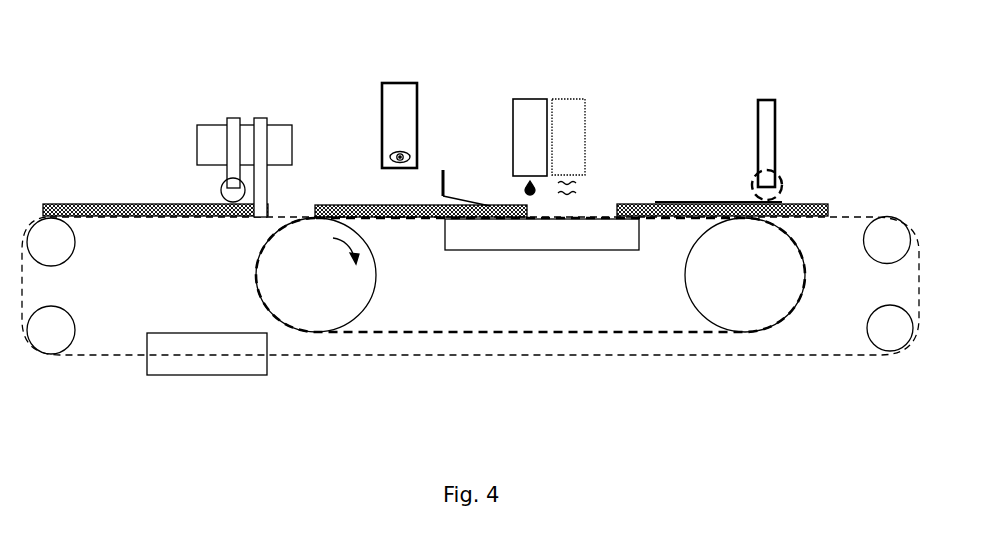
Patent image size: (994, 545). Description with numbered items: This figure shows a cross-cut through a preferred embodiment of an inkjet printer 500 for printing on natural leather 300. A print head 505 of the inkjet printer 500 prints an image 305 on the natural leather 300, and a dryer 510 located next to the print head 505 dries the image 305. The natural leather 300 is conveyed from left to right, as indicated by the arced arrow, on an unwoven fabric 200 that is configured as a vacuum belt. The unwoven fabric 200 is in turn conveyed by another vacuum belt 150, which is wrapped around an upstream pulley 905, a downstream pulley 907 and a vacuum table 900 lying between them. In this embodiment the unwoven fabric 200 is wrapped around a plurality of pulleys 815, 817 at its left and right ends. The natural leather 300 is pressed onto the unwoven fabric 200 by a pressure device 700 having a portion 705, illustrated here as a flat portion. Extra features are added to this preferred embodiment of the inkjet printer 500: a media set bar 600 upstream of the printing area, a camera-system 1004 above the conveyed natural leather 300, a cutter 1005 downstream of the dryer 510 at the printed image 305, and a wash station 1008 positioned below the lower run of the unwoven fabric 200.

The inkjet printer 500 is at (146, 103).
The media set bar 600 is at (279, 130).
The camera-system 1004 is at (394, 108).
The pressure device 700 is at (445, 170).
The portion 705 is at (477, 203).
The print head 505 is at (530, 112).
The dryer 510 is at (568, 105).
The cutter 1005 is at (766, 112).
The image 305 is at (728, 202).
The natural leather 300 is at (80, 204).
The pulley 815 is at (63, 243).
The pulley 817 is at (895, 248).
The upstream pulley 905 is at (365, 290).
The downstream pulley 907 is at (712, 300).
The vacuum table 900 is at (475, 240).
The unwoven fabric 200 is at (462, 355).
The vacuum belt 150 is at (575, 334).
The wash station 1008 is at (205, 375).